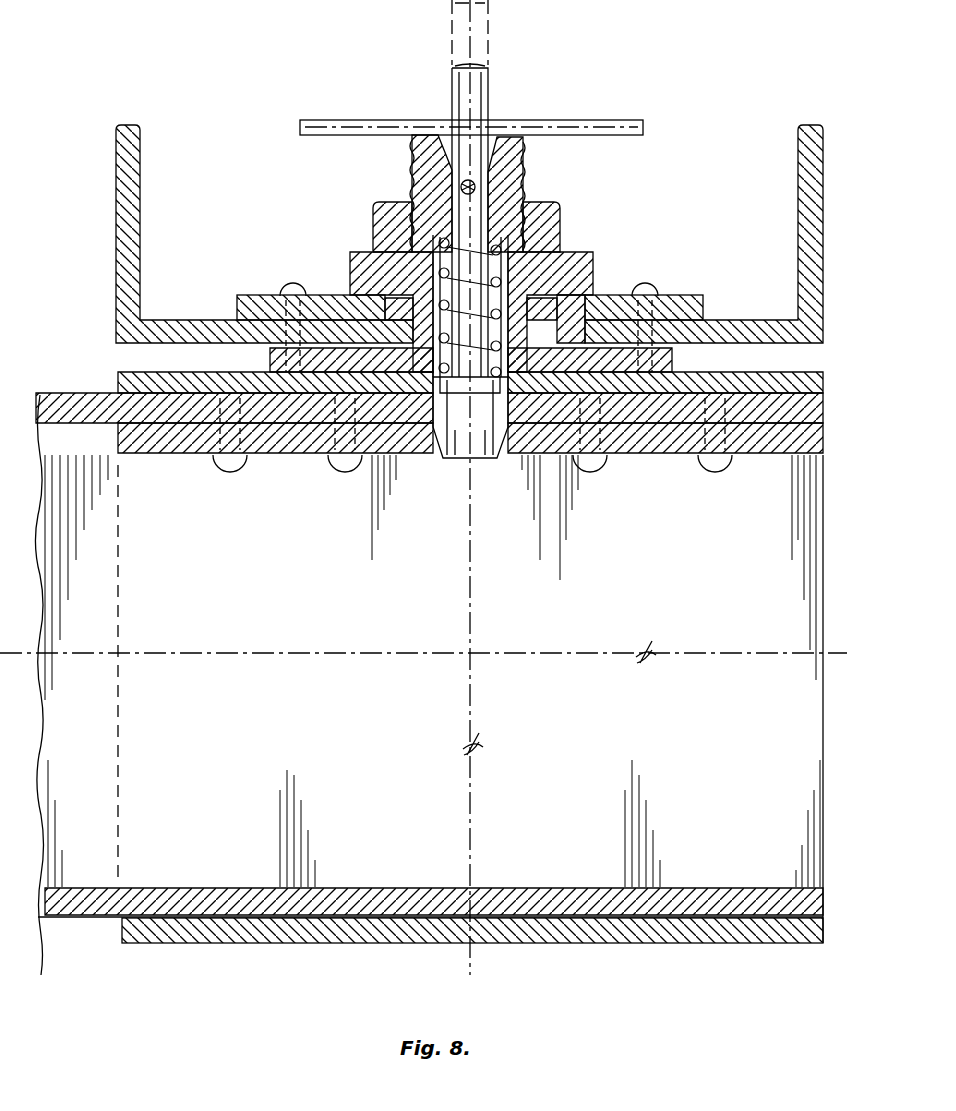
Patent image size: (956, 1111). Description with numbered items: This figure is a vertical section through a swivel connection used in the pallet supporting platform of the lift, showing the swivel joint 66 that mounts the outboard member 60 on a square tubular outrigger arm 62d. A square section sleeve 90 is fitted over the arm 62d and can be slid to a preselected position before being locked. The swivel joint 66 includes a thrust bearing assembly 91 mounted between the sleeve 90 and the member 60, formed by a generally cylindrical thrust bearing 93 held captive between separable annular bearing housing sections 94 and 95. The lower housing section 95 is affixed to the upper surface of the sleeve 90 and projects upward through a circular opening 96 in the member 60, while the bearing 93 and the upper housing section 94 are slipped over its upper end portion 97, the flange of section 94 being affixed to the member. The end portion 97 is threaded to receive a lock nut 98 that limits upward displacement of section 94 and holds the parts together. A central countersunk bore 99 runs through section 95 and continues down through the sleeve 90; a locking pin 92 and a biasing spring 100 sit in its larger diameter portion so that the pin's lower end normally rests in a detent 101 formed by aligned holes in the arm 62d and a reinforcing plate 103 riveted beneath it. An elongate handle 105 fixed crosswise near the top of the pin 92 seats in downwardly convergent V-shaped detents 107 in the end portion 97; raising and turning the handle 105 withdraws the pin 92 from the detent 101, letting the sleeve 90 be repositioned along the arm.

The outboard member 60 is at (145, 130).
The arm 62d is at (100, 392).
The swivel joint 66 is at (597, 92).
The sleeve 90 is at (128, 372).
The thrust bearing assembly 91 is at (611, 266).
The locking pin 92 is at (492, 88).
The thrust bearing 93 is at (575, 310).
The bearing housing section 94 is at (352, 262).
The bearing housing section 95 is at (327, 290).
The circular opening 96 is at (600, 315).
The upper end portion 97 is at (525, 172).
The lock nut 98 is at (565, 222).
The central countersunk bore 99 is at (515, 218).
The biasing spring 100 is at (425, 230).
The detent 101 is at (492, 455).
The reinforcing plate 103 is at (292, 456).
The handle 105 is at (461, 187).
The detents 107 is at (497, 140).